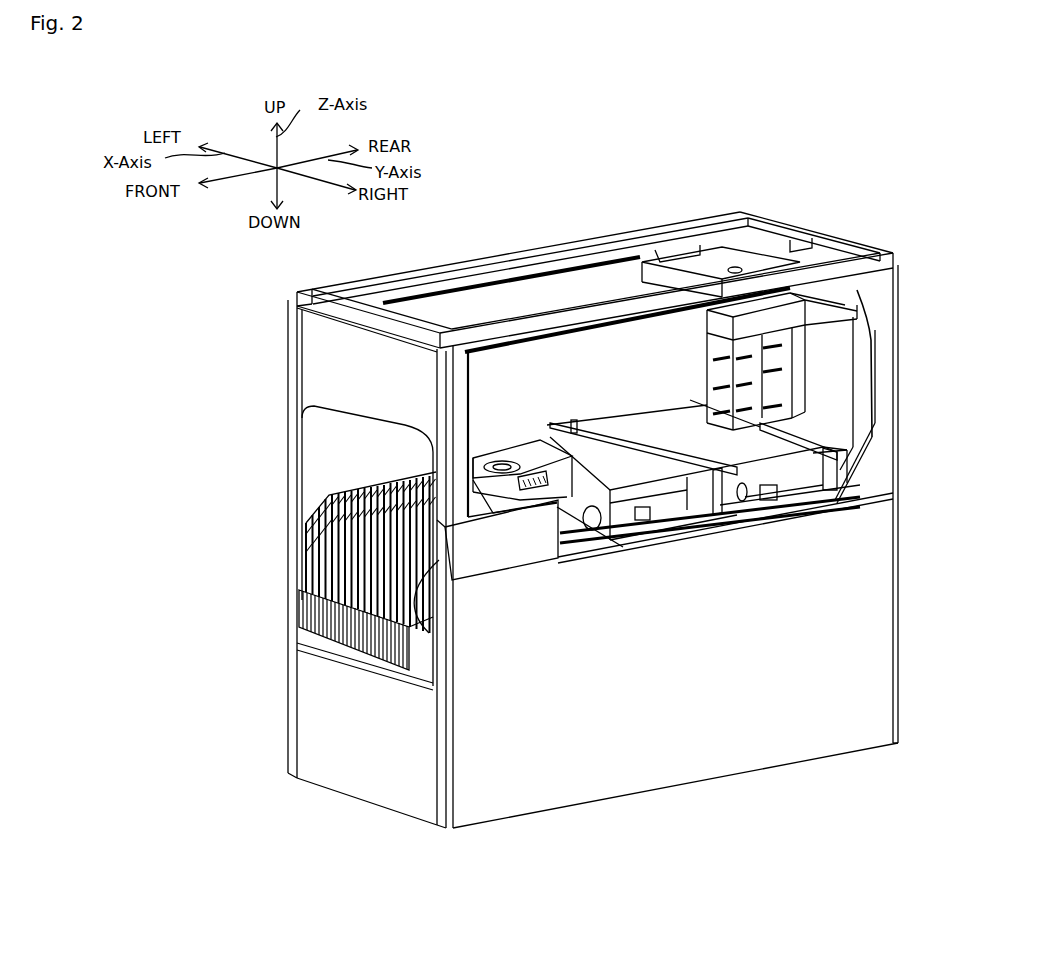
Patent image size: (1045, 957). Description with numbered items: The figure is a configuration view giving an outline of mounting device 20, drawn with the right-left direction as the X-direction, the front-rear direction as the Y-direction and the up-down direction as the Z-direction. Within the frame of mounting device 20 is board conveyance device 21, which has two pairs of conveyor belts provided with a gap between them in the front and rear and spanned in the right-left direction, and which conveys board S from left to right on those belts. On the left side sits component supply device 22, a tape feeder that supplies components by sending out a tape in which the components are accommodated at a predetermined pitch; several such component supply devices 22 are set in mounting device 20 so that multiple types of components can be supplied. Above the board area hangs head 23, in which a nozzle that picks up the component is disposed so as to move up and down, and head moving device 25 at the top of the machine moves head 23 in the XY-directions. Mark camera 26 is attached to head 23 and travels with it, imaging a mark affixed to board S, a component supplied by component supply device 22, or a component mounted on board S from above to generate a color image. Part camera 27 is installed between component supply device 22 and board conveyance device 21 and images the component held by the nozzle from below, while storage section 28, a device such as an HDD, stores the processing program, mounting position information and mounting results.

The mounting device 20 is at (818, 192).
The board conveyance device 21 is at (707, 500).
The component supply device 22 is at (302, 521).
The head 23 is at (807, 355).
The head moving device 25 is at (703, 232).
The mark camera 26 is at (800, 430).
The part camera 27 is at (508, 462).
The storage section 28 is at (545, 473).
The board S is at (583, 440).